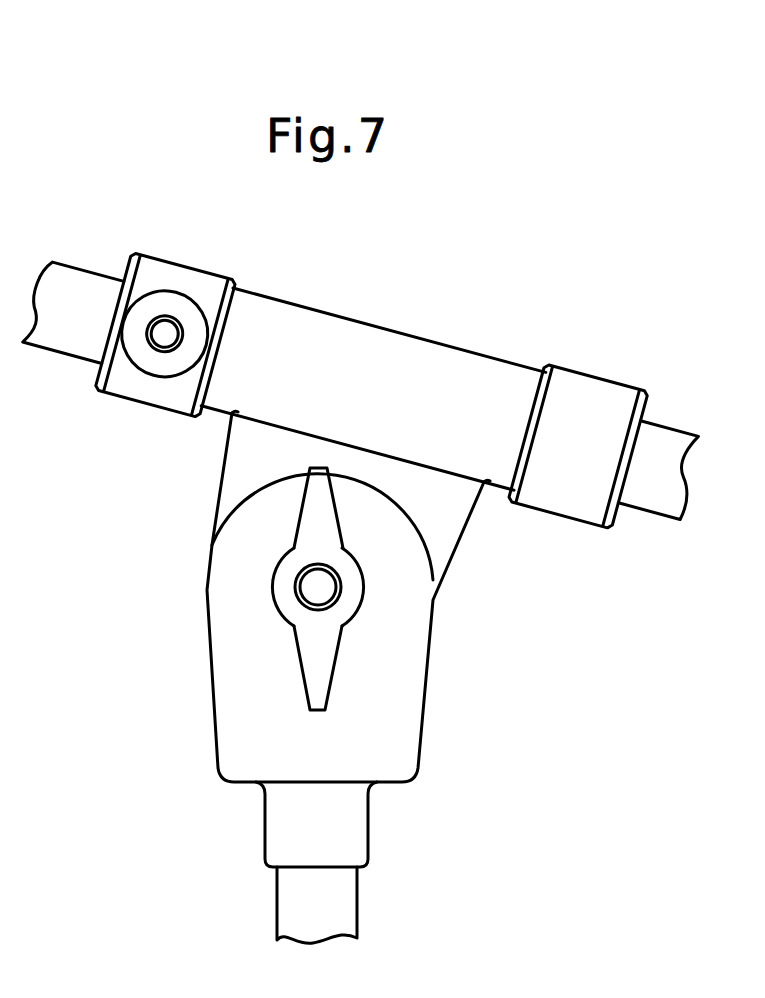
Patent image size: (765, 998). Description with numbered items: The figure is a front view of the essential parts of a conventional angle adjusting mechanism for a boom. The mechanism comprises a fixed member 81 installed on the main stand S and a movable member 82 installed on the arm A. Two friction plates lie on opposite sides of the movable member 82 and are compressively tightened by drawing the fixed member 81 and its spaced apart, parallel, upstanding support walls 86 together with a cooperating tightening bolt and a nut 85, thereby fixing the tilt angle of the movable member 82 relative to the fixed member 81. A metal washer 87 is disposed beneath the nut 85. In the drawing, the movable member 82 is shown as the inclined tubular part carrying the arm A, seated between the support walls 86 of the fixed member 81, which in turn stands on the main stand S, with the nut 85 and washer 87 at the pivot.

The arm A is at (80, 288).
The movable member 82 is at (512, 388).
The support walls 86 is at (405, 582).
The metal washer 87 is at (282, 570).
The nut 85 is at (312, 655).
The fixed member 81 is at (345, 825).
The main stand S is at (330, 917).